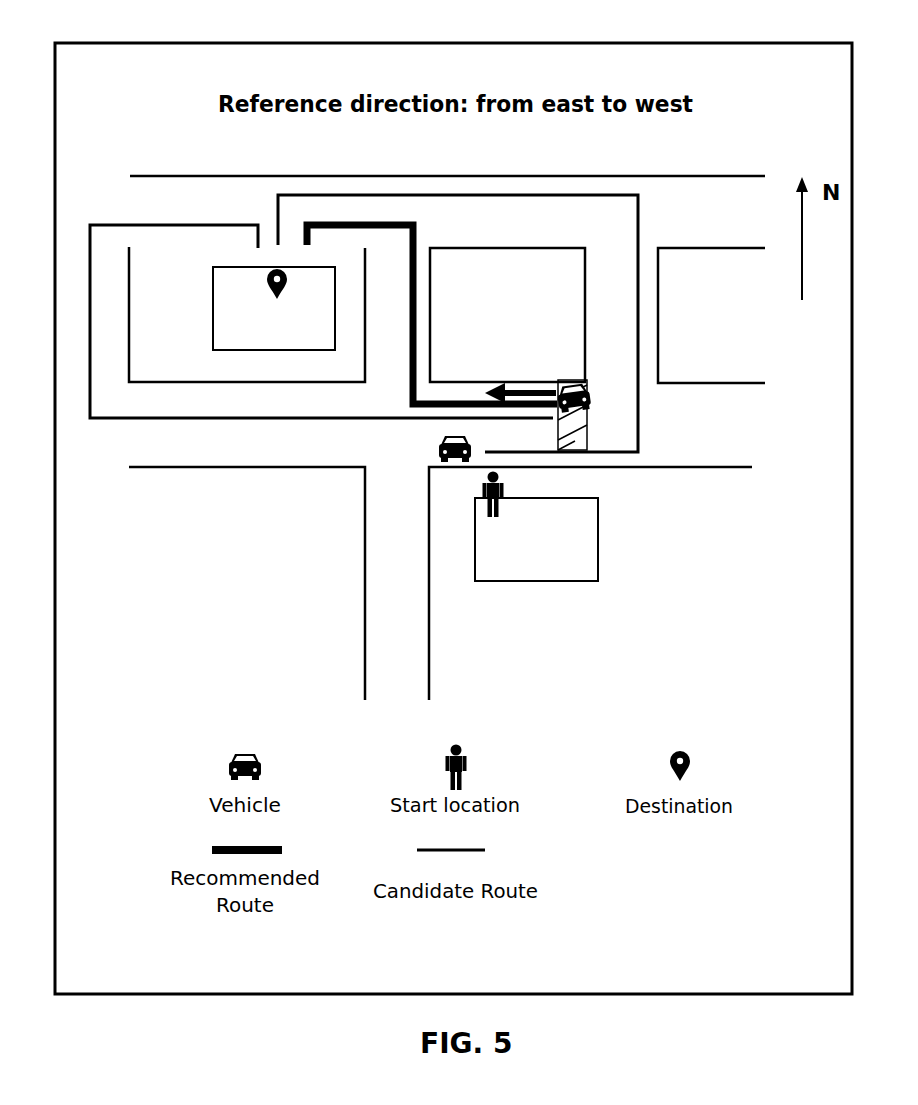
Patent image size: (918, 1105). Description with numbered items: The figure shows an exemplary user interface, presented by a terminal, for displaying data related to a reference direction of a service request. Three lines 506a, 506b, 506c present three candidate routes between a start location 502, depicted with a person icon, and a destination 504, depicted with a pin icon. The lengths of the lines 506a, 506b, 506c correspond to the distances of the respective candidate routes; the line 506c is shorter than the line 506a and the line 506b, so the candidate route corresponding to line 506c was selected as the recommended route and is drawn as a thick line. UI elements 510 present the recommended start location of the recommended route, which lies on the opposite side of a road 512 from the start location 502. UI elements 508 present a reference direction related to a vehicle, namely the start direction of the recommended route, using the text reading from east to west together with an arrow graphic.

The start location 502 is at (505, 508).
The destination 504 is at (262, 284).
The line 506a is at (640, 433).
The line 506b is at (296, 418).
The line 506c is at (418, 330).
The UI elements 508 is at (528, 392).
The UI elements 510 is at (590, 398).
The road 512 is at (338, 441).